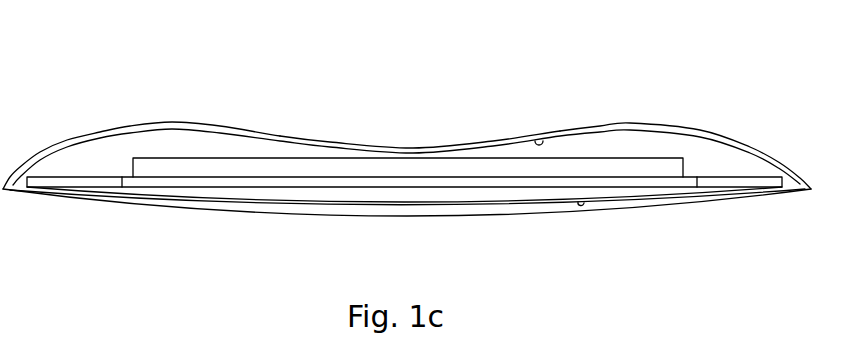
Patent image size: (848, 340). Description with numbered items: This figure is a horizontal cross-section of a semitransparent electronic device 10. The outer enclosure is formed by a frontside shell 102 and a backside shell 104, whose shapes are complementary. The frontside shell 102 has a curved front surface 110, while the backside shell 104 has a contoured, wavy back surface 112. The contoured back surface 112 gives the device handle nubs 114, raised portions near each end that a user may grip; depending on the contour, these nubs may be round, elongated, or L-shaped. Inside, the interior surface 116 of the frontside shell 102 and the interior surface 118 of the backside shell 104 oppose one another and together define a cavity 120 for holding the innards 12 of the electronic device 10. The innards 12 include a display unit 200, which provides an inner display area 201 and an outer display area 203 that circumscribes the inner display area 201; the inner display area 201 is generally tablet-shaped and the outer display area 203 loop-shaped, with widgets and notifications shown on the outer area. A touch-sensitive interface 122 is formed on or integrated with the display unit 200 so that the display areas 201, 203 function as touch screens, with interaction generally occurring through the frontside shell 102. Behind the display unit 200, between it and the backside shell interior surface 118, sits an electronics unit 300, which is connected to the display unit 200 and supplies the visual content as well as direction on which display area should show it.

The semitransparent electronic device 10 is at (388, 66).
The innards 12 is at (296, 142).
The frontside shell 102 is at (443, 213).
The backside shell 104 is at (599, 127).
The curved front surface 110 is at (365, 218).
The contoured back surface 112 is at (407, 146).
The handle nubs 114 is at (171, 121).
The interior surface of the frontside shell 116 is at (582, 206).
The interior surface of the backside shell 118 is at (540, 139).
The cavity 120 is at (238, 147).
The touch-sensitive interface 122 is at (490, 197).
The display unit 200 is at (264, 183).
The inner display area 201 is at (447, 188).
The outer display area 203 is at (90, 187).
The electronics unit 300 is at (352, 161).